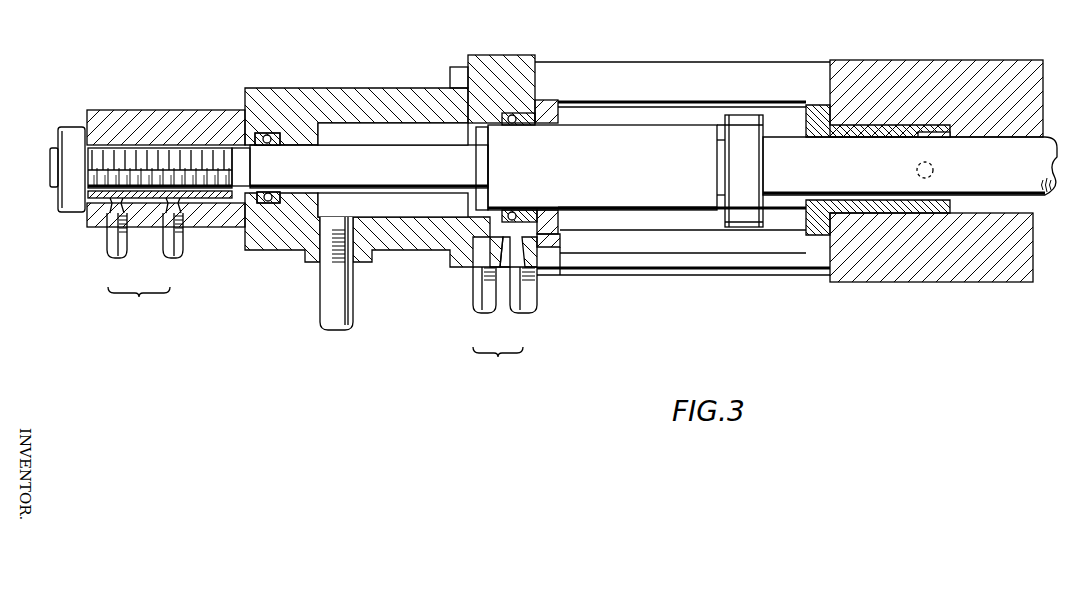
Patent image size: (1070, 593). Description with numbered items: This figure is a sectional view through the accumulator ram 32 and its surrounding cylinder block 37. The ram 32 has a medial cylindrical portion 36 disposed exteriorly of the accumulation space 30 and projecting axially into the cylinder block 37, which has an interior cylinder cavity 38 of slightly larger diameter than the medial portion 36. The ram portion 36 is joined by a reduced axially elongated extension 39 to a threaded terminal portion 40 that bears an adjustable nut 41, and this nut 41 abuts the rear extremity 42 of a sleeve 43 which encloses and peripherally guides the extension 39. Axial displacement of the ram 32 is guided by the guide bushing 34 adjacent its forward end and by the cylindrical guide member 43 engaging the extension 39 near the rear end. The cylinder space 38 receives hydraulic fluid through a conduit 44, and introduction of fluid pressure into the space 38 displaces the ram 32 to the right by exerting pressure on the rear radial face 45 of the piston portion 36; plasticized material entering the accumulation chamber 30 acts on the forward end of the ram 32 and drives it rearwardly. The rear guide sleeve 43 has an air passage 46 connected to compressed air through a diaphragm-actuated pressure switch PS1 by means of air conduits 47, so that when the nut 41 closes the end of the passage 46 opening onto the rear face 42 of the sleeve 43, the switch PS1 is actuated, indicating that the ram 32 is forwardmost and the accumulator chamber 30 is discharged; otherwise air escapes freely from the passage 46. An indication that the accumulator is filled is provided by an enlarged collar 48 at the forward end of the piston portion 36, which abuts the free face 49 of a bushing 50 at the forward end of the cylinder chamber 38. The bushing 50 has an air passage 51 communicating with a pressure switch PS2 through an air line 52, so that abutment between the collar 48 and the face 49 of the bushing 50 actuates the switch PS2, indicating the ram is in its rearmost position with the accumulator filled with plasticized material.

The accumulation space 30 is at (982, 205).
The accumulator ram 32 is at (826, 179).
The guide bushing 34 is at (816, 231).
The medial cylindrical portion 36 is at (616, 180).
The cylinder block 37 is at (422, 240).
The interior cylinder cavity 38 is at (366, 228).
The reduced axially elongated extension 39 is at (314, 177).
The threaded terminal portion 40 is at (184, 157).
The adjustable nut 41 is at (78, 210).
The rear extremity 42 is at (87, 128).
The sleeve 43 is at (207, 225).
The conduit 44 is at (333, 305).
The rear radial face 45 is at (479, 173).
The air passage 46 is at (96, 206).
The air conduits 47 is at (167, 258).
The enlarged collar 48 is at (749, 172).
The free face 49 is at (561, 236).
The bushing 50 is at (541, 100).
The air passage 51 is at (503, 233).
The air line 52 is at (482, 297).
The pressure switch PS1 is at (139, 309).
The pressure switch PS2 is at (498, 367).